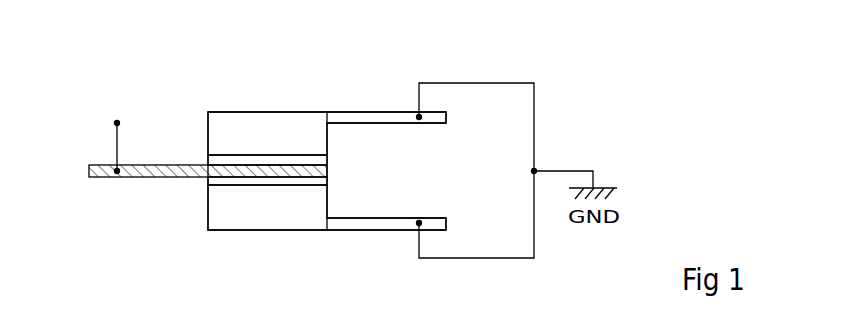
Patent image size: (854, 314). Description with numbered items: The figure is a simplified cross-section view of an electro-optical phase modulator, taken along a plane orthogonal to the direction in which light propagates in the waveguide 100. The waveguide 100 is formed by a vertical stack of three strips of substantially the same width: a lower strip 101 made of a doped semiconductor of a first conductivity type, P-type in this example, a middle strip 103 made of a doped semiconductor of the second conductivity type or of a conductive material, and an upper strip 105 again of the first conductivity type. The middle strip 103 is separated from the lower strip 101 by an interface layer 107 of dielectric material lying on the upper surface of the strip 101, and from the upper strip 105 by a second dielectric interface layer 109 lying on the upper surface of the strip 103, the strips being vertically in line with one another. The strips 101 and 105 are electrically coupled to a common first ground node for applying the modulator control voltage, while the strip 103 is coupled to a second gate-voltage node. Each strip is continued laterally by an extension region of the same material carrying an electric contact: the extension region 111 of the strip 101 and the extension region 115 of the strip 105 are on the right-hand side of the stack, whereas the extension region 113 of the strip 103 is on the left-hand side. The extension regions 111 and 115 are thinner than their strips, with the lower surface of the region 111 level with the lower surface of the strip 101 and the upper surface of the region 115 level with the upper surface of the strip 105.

The waveguide 100 is at (298, 102).
The strip 101 is at (237, 221).
The strip 103 is at (308, 173).
The strip 105 is at (242, 120).
The interface layer 107 is at (232, 180).
The interface layer 109 is at (227, 160).
The extension region 111 is at (385, 223).
The extension region 113 is at (135, 177).
The extension region 115 is at (380, 118).